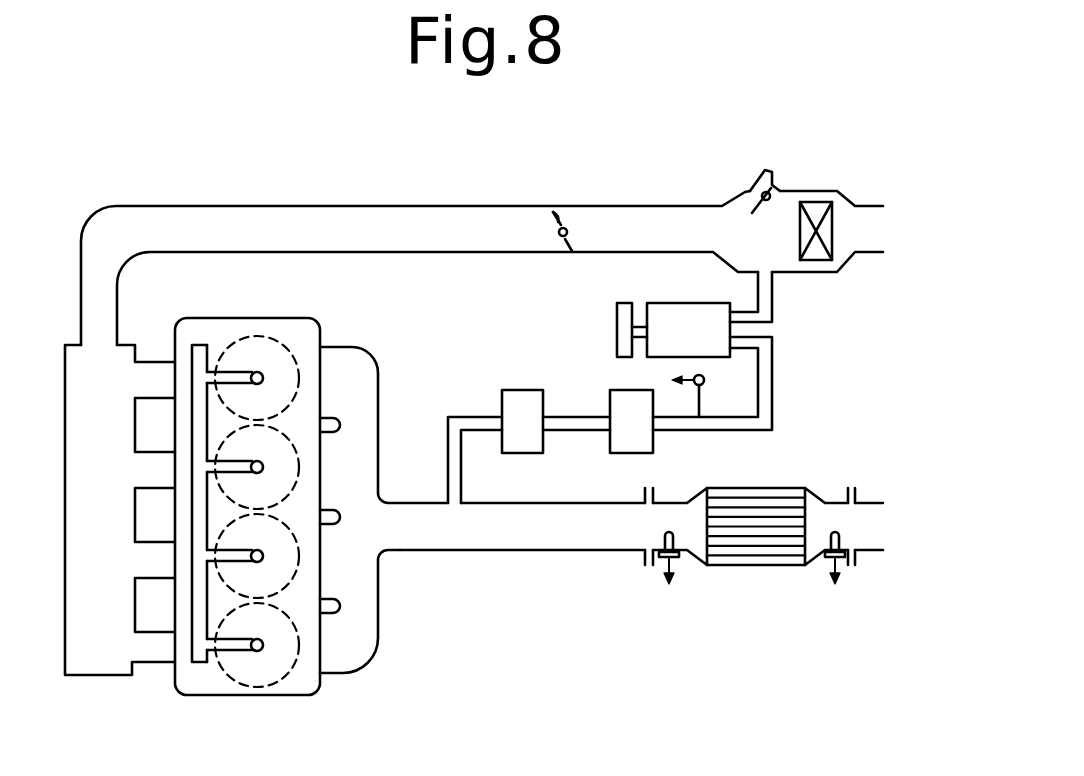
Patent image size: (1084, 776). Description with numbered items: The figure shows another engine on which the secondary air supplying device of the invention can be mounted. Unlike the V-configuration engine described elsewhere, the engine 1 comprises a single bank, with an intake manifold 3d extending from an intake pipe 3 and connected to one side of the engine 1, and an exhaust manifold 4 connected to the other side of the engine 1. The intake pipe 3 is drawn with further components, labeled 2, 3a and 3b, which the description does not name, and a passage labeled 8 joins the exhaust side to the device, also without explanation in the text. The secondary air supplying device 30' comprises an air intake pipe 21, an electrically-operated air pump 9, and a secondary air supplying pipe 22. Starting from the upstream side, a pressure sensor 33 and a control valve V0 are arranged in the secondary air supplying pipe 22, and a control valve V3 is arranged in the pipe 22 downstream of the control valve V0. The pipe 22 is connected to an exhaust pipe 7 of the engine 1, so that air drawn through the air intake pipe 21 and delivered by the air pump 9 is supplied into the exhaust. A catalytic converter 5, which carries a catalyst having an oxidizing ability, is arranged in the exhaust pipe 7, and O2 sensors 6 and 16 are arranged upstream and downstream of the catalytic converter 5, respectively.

The engine 1 is at (322, 695).
The air flow meter 2 is at (816, 204).
The intake pipe 3 is at (470, 219).
The secondary throttle valve 3a is at (562, 214).
The throttle valve 3b is at (750, 185).
The intake manifold 3d is at (92, 665).
The exhaust manifold 4 is at (348, 376).
The catalytic converter 5 is at (773, 565).
The O2 sensor 6 is at (665, 560).
The exhaust pipe 7 is at (545, 544).
The exhaust gas recirculation pipe 8 is at (456, 506).
The electrically-operated air pump 9 is at (677, 318).
The O2 sensor 16 is at (830, 560).
The air intake pipe 21 is at (764, 300).
The secondary air supplying pipe 22 is at (768, 403).
The secondary air supplying device 30' is at (899, 334).
The pressure sensor 33 is at (705, 380).
The control valve V3 is at (517, 398).
The control valve V0 is at (620, 455).